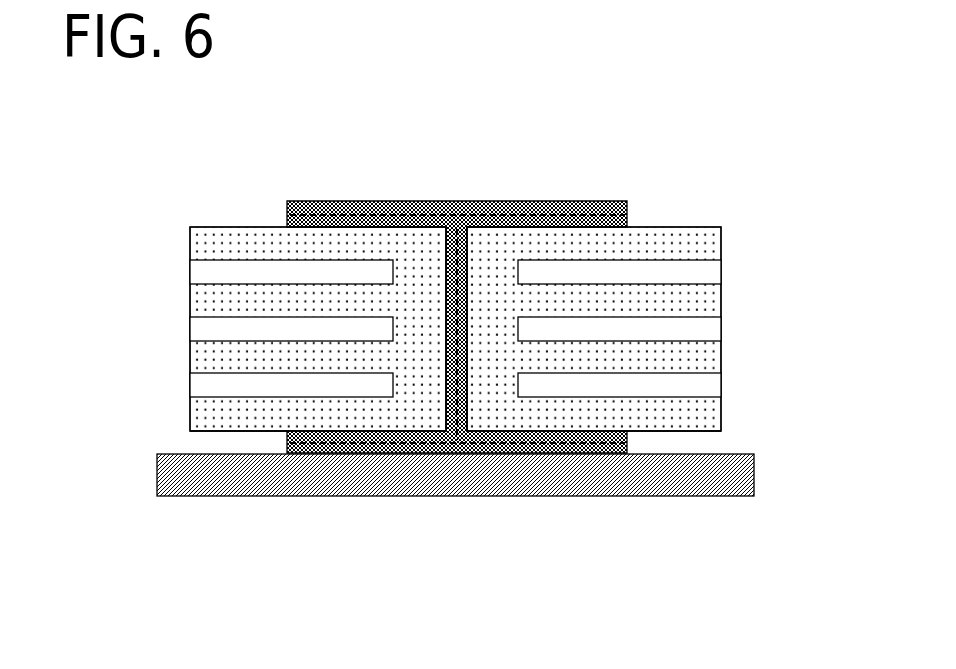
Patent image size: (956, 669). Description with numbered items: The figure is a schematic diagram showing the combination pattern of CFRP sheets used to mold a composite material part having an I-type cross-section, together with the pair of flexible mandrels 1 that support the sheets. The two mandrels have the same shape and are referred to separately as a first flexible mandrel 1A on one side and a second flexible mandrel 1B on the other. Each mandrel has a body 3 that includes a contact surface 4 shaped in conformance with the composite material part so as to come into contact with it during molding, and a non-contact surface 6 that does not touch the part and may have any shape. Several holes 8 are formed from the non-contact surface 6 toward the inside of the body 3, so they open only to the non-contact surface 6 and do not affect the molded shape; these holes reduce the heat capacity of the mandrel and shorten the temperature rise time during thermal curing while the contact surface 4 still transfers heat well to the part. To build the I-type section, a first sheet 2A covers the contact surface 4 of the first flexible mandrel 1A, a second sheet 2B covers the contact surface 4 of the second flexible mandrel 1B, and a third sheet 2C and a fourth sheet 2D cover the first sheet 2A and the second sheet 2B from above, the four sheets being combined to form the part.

The flexible mandrel 1 is at (465, 301).
The first flexible mandrel 1A is at (690, 227).
The second flexible mandrel 1B is at (214, 227).
The first sheet 2A is at (607, 202).
The second sheet 2B is at (297, 202).
The third sheet 2C is at (448, 202).
The fourth sheet 2D is at (445, 455).
The body 3 is at (218, 432).
The contact surface 4 is at (368, 226).
The non-contact surface 6 is at (190, 240).
The hole 8 is at (208, 333).